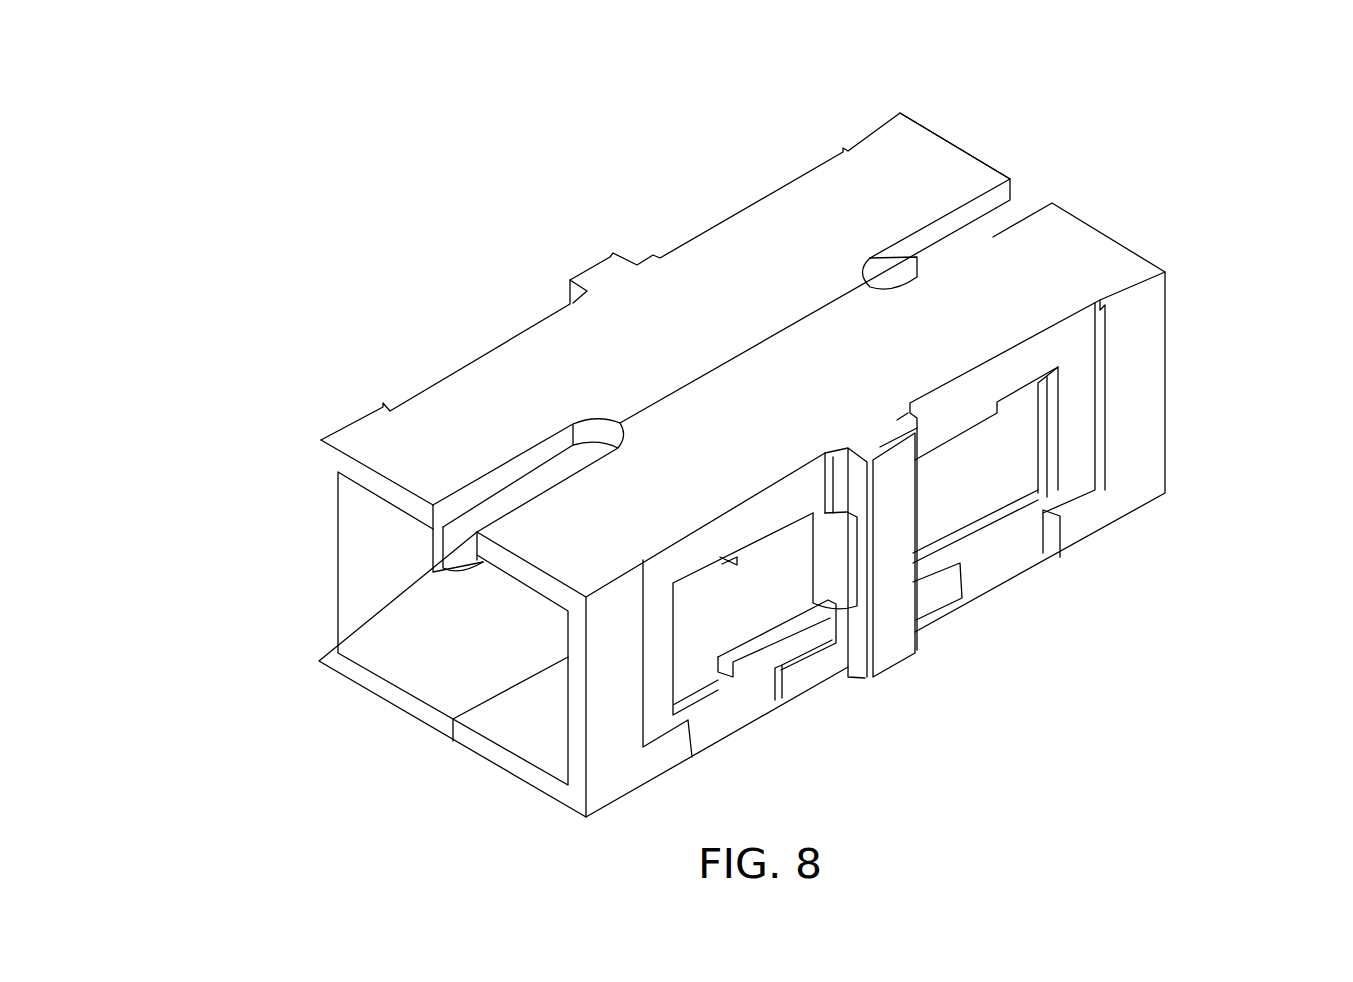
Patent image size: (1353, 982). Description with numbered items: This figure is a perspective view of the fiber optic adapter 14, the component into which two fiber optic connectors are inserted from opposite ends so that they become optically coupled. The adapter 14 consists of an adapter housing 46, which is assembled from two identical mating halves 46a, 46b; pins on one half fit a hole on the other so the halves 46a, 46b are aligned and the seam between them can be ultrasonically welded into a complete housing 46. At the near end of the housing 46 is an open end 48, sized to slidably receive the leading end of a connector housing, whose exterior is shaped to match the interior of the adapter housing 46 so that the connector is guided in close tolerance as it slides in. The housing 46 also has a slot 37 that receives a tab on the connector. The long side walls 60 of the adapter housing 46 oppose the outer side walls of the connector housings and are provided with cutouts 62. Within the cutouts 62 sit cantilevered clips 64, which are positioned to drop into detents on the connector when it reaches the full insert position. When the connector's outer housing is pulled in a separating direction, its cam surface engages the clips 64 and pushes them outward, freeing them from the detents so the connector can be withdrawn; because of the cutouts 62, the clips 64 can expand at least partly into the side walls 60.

The fiber optic adapter 14 is at (215, 466).
The adapter housing 46 is at (473, 360).
The adapter housing mating half 46a is at (610, 770).
The adapter housing mating half 46b is at (318, 607).
The open end 48 is at (960, 148).
The slot 37 is at (567, 440).
The side walls 60 is at (725, 219).
The cutouts 62 is at (698, 693).
The cantilevered clips 64 is at (453, 542).